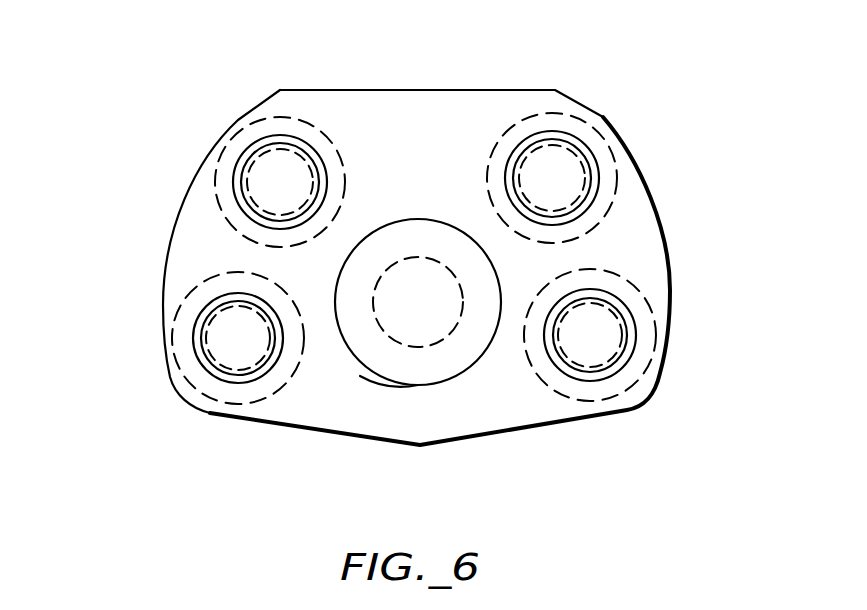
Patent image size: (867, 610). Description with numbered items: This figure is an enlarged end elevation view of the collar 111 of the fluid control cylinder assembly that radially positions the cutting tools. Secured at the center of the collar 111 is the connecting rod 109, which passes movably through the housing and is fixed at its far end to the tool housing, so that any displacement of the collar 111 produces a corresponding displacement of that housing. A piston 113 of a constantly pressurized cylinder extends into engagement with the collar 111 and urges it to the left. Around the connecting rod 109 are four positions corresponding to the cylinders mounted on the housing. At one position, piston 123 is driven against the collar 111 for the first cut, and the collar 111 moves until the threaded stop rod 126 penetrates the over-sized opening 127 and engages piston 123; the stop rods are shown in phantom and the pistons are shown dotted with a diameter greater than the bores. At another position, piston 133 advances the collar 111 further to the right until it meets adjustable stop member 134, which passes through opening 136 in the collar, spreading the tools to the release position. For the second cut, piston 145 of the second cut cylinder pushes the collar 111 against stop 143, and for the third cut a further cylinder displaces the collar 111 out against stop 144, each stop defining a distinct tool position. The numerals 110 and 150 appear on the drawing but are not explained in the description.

The connecting rod 109 is at (438, 219).
The central opening wall 110 is at (388, 378).
The collar 111 is at (655, 196).
The piston 113 is at (444, 347).
The piston 123 is at (310, 119).
The threaded stop rod 126 is at (316, 178).
The over-sized opening 127 is at (250, 155).
The piston 133 is at (188, 290).
The adjustable stop member 134 is at (214, 368).
The opening 136 is at (202, 332).
The stop 143 is at (587, 168).
The stop 144 is at (623, 326).
The piston 145 is at (600, 118).
The recess 150 is at (650, 362).